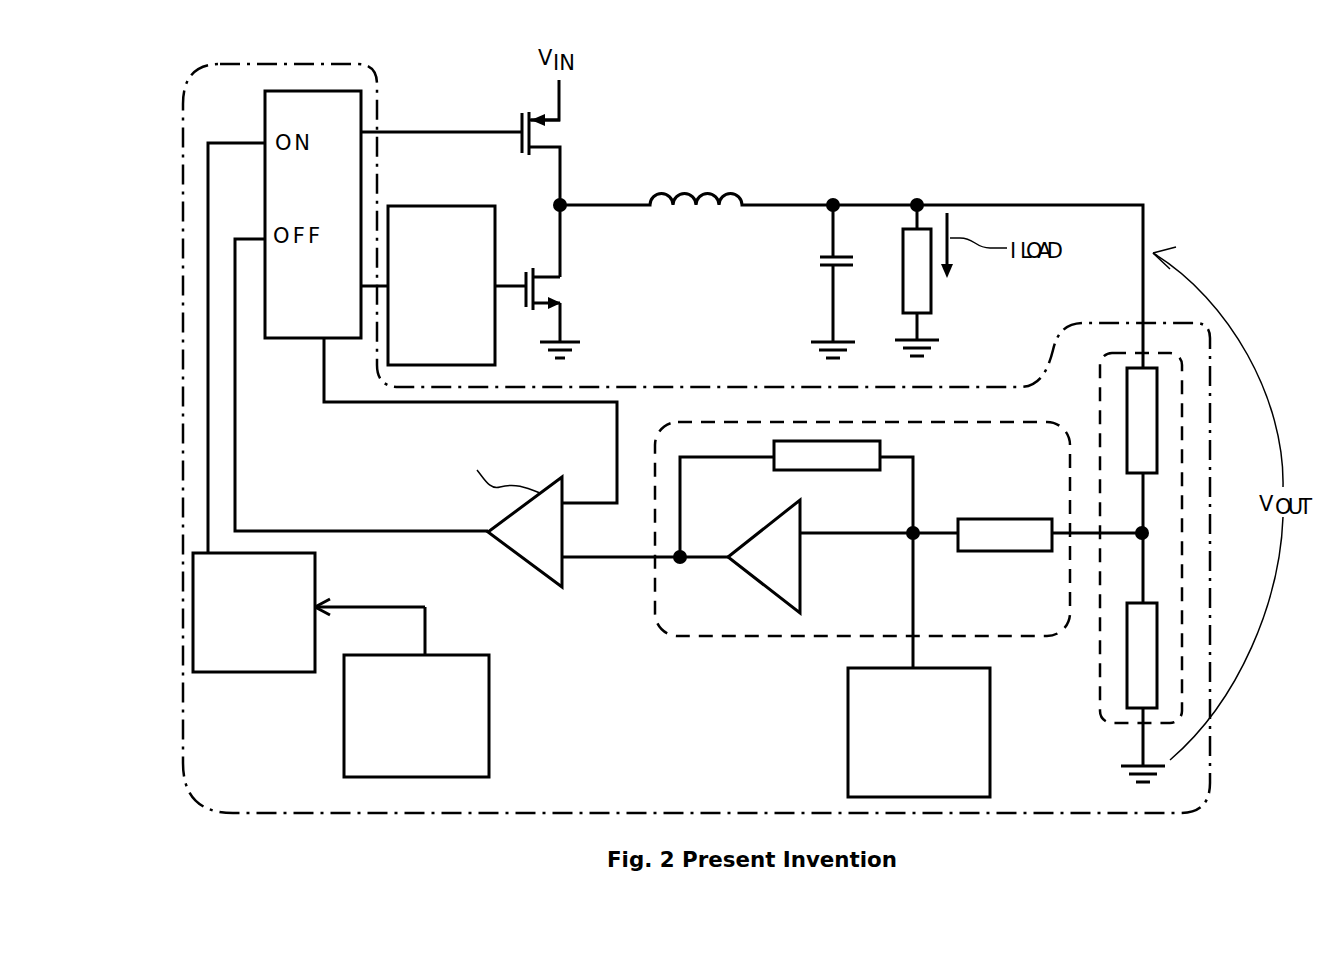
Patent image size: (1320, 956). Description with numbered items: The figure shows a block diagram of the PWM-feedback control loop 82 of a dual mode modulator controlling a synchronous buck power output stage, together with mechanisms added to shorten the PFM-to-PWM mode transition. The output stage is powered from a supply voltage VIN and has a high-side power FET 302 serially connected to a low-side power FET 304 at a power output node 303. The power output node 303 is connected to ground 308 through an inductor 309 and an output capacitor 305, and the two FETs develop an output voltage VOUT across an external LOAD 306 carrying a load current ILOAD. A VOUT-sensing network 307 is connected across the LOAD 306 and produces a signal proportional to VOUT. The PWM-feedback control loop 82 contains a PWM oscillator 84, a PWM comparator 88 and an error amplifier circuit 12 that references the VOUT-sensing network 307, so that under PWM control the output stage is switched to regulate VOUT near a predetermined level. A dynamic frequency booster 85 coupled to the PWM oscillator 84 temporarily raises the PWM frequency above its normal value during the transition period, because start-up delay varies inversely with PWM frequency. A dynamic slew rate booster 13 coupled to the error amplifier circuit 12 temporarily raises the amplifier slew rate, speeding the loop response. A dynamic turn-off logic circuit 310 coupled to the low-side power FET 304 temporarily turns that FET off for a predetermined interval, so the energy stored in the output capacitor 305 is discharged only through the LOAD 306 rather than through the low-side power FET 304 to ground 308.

The PWM-feedback control loop 82 is at (183, 422).
The high-side power FET 302 is at (553, 132).
The power output node 303 is at (567, 200).
The low-side power FET 304 is at (560, 285).
The output capacitor COUT 305 is at (828, 268).
The external LOAD 306 is at (935, 293).
The VOUT-sensing network 307 is at (1108, 352).
The ground 308 is at (1135, 763).
The inductor 309 is at (710, 190).
The dynamic turn-off logic circuit 310 is at (441, 285).
The PWM comparator 88 is at (480, 507).
The PWM oscillator 84 is at (309, 612).
The dynamic frequency booster 85 is at (416, 716).
The error amplifier (E/A) circuit 12 is at (768, 637).
The dynamic slew rate booster 13 is at (919, 732).